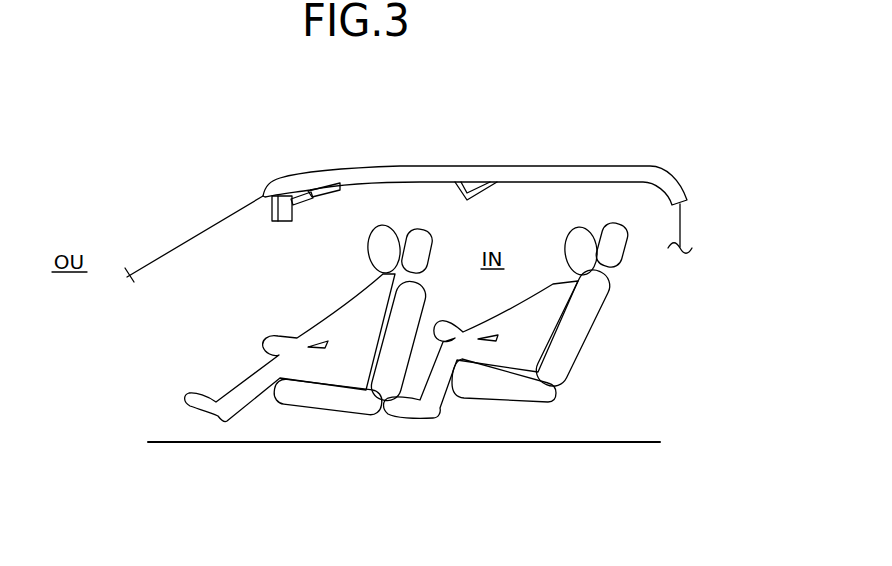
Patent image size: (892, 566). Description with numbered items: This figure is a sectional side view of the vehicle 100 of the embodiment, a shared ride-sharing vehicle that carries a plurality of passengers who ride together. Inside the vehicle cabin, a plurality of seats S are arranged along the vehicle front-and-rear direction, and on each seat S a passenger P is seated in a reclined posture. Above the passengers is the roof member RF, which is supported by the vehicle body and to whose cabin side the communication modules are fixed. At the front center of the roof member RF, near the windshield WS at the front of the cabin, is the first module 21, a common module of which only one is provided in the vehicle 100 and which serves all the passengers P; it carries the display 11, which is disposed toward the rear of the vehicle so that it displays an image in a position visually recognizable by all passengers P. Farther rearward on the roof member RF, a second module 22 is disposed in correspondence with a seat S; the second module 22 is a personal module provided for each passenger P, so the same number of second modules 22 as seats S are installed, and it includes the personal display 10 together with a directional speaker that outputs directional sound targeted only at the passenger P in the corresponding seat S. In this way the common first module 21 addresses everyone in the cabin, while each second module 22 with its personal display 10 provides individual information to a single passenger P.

The vehicle 100 is at (265, 177).
The personal display 10 is at (478, 198).
The display 11 is at (305, 207).
The first module 21 is at (306, 232).
The second module 22 is at (470, 172).
The roof member RF is at (558, 150).
The windshield WS is at (143, 263).
The passenger P is at (340, 352).
The seat S is at (362, 400).